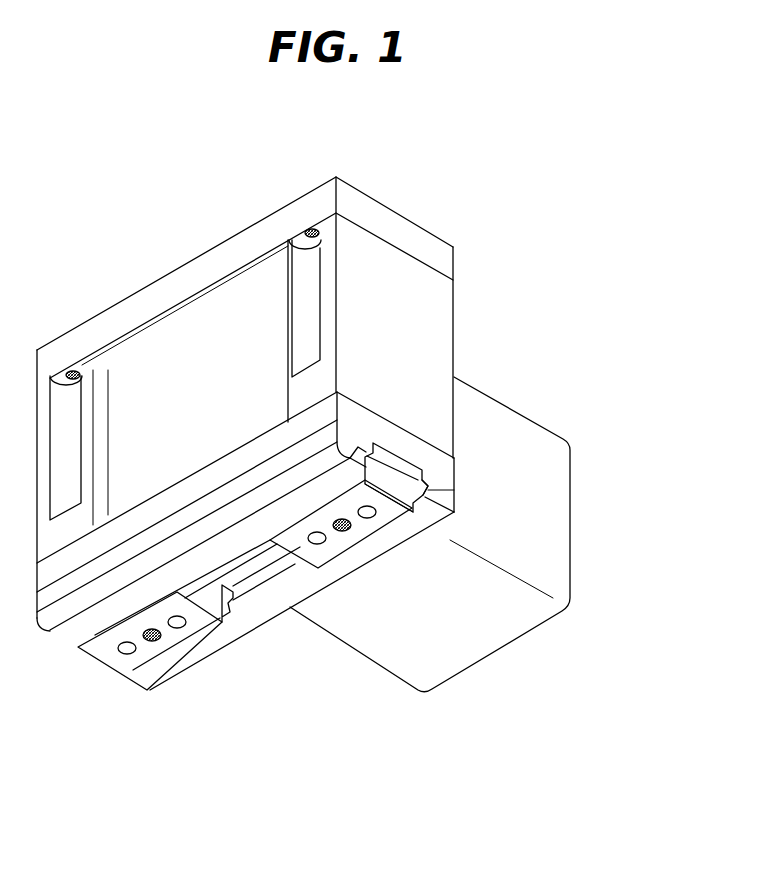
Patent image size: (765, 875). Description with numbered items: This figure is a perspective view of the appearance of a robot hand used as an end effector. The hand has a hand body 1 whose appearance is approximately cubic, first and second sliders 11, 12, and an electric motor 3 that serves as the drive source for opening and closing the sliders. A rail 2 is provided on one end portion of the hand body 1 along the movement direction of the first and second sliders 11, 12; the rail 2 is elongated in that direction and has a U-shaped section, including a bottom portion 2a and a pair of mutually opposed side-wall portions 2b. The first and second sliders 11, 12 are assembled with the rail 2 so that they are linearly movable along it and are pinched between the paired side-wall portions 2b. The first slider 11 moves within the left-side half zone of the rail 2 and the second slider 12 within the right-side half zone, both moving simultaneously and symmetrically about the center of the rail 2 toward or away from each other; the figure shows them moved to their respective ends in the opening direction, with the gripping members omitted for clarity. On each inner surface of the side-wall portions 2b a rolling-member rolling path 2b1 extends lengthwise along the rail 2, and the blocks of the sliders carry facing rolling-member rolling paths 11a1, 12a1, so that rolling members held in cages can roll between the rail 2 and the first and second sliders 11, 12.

The hand body 1 is at (407, 278).
The rail 2 is at (422, 455).
The bottom portion 2a is at (401, 443).
The side-wall portions 2b is at (358, 447).
The rolling-member rolling path 2b1 is at (262, 578).
The electric motor 3 is at (537, 462).
The first slider 11 is at (109, 658).
The rolling-member rolling path 11a1 is at (234, 608).
The second slider 12 is at (345, 548).
The rolling-member rolling path 12a1 is at (440, 487).